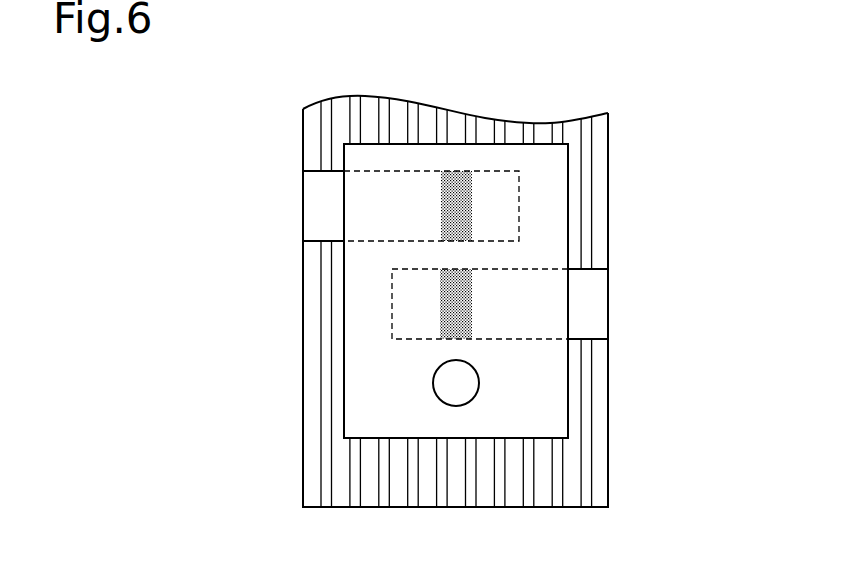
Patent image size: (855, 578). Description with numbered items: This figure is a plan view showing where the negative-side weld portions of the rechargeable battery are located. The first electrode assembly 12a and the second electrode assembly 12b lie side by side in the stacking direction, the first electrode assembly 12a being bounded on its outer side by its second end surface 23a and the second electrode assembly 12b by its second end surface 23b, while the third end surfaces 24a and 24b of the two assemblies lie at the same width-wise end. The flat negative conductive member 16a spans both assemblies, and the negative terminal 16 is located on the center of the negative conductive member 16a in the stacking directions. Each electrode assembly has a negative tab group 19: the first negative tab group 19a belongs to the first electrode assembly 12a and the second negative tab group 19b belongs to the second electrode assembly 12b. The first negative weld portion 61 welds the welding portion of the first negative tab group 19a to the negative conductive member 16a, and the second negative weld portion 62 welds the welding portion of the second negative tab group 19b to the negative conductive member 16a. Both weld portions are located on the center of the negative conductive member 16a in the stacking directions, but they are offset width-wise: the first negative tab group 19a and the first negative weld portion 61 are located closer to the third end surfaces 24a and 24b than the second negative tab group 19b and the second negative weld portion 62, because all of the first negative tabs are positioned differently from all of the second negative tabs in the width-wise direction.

The first electrode assembly 12a is at (683, 179).
The second electrode assembly 12b is at (303, 135).
The negative terminal 16 is at (433, 383).
The negative conductive member 16a is at (353, 421).
The negative tab group 19 is at (487, 255).
The first negative tab group 19a is at (609, 300).
The second negative tab group 19b is at (303, 203).
The second end surface 23a is at (609, 227).
The second end surface 23b is at (303, 356).
The third end surface 24a is at (540, 508).
The third end surface 24b is at (369, 508).
The first negative weld portion 61 is at (465, 304).
The second negative weld portion 62 is at (445, 210).